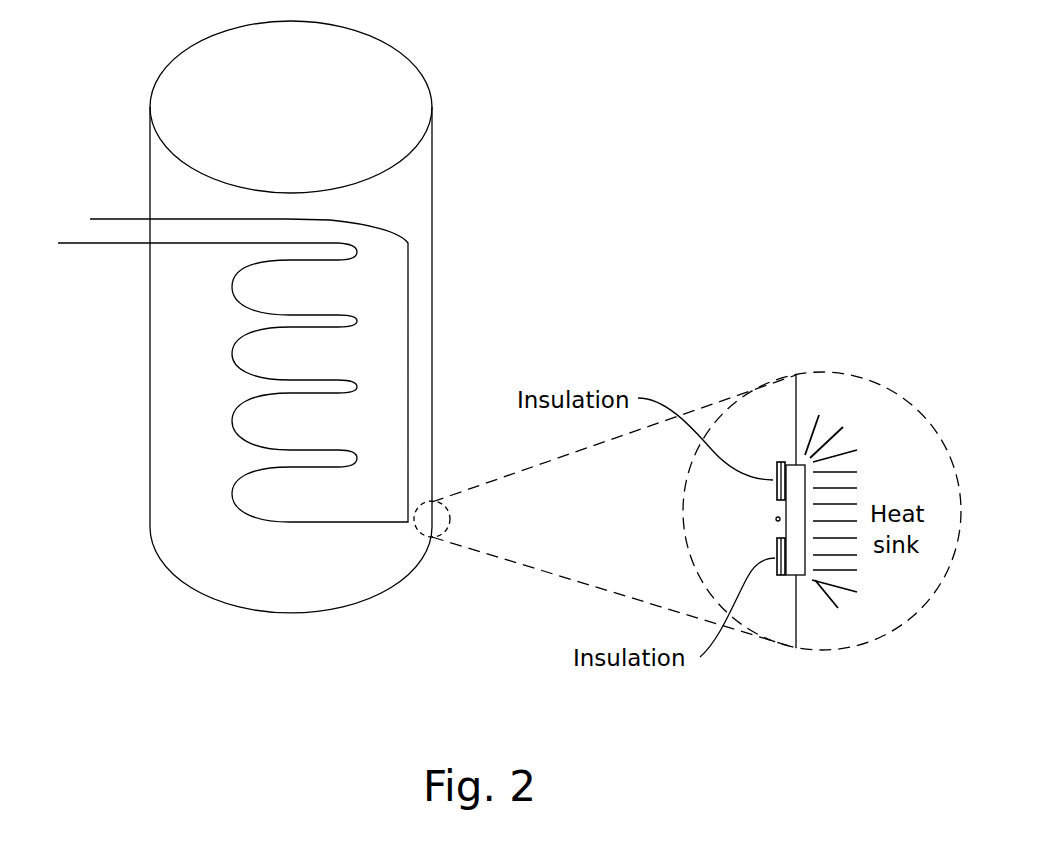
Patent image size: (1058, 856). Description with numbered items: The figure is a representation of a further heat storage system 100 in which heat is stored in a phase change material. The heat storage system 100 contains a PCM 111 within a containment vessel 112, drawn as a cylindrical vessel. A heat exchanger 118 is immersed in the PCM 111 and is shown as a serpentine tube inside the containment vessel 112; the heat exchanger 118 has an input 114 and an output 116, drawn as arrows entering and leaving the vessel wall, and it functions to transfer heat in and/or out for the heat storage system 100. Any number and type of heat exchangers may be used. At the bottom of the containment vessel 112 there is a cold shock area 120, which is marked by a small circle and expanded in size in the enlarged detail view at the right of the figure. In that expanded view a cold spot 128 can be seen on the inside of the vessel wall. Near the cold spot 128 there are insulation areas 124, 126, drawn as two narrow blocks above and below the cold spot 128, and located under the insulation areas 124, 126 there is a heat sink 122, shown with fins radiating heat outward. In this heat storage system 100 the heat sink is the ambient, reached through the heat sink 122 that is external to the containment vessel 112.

The heat storage system 100 is at (488, 120).
The PCM 111 is at (165, 523).
The containment vessel 112 is at (433, 200).
The input 114 is at (84, 219).
The output 116 is at (53, 243).
The heat exchanger 118 is at (232, 420).
The cold shock area 120 is at (432, 537).
The heat sink 122 is at (800, 562).
The insulation area 124 is at (780, 575).
The insulation area 126 is at (777, 468).
The cold spot 128 is at (746, 522).